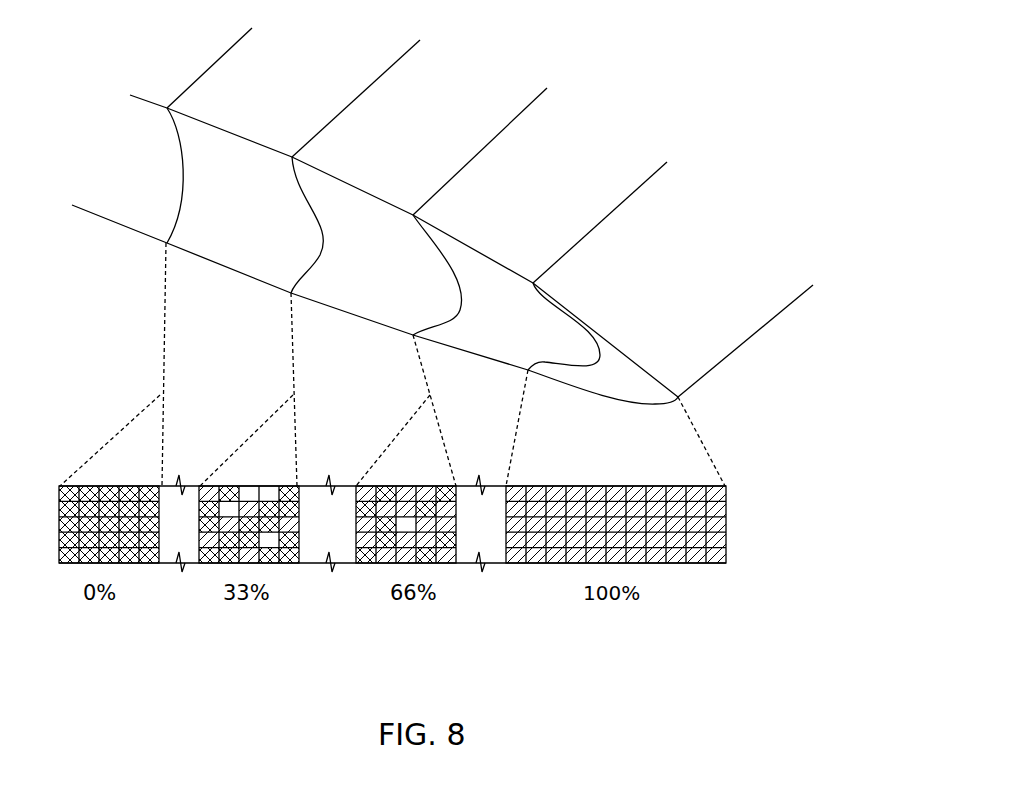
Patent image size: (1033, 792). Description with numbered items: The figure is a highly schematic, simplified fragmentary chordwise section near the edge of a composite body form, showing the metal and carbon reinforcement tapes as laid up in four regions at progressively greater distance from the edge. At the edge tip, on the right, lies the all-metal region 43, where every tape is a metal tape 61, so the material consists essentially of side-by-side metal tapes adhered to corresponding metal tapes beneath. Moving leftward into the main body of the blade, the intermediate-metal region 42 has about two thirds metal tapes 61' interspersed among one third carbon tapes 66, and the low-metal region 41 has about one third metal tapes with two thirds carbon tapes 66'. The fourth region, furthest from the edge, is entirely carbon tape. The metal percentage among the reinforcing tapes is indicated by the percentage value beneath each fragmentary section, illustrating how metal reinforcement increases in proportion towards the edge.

The low-metal region 41 is at (232, 638).
The intermediate-metal region 42 is at (383, 632).
The all-metal region 43 is at (578, 632).
The metal reinforcements 61 is at (616, 552).
The metal tapes 61' is at (419, 552).
The carbon tapes 66 is at (403, 553).
The carbon tapes 66' is at (242, 557).